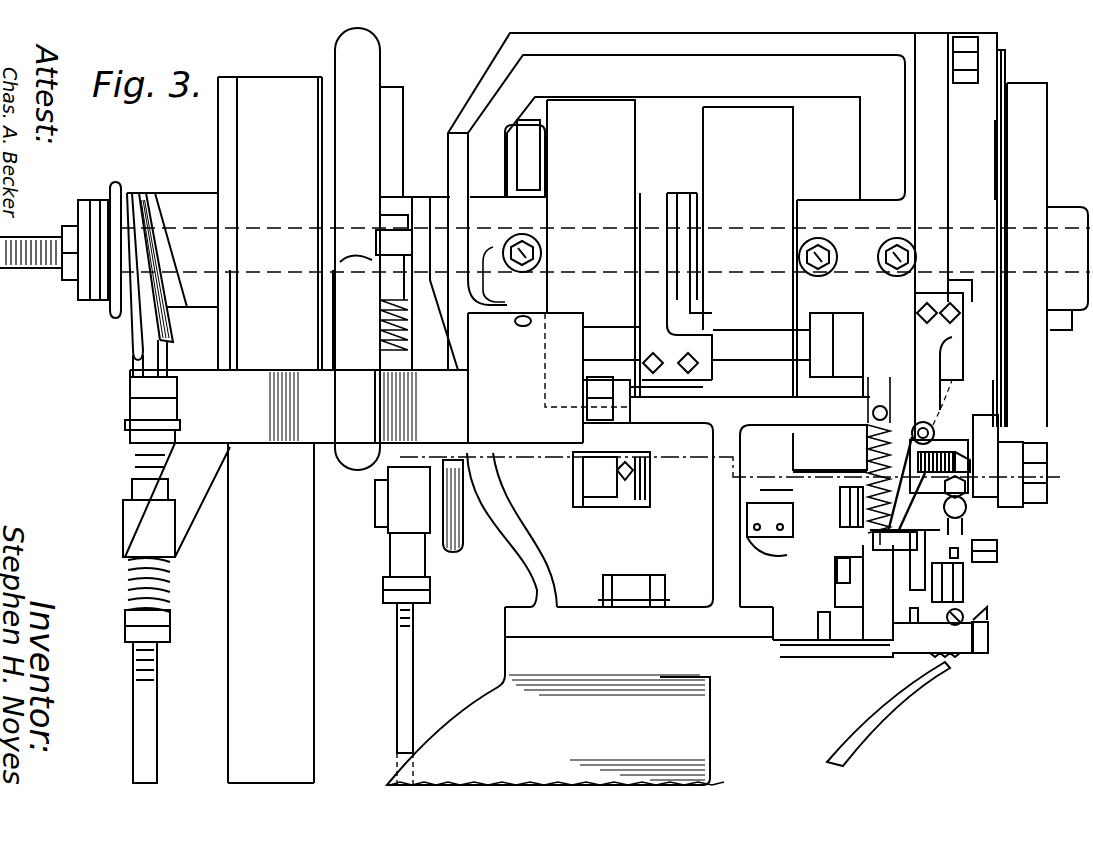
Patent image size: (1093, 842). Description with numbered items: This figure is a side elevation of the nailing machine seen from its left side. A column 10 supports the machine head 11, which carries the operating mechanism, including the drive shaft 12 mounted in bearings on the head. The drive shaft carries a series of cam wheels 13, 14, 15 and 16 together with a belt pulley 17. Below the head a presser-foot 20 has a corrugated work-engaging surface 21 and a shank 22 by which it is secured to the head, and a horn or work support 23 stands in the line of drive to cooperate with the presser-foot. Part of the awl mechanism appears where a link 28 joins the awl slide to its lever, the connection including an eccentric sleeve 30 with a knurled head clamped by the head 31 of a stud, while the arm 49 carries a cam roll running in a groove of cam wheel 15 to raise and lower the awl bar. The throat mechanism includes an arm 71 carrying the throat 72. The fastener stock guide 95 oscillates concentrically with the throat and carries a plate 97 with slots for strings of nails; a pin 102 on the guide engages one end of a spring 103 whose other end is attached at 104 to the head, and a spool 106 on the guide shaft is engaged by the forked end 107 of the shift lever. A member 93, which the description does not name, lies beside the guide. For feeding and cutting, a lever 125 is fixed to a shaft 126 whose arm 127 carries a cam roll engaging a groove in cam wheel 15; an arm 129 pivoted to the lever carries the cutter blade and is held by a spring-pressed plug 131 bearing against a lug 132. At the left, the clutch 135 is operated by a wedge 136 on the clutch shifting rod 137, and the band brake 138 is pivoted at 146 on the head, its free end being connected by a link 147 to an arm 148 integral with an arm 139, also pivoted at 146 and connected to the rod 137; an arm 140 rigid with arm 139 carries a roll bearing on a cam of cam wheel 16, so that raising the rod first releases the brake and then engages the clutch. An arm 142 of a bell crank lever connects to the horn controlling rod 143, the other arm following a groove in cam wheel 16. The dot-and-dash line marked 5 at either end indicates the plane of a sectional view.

The center line 5 is at (740, 468).
The column 10 is at (580, 696).
The machine head 11 is at (523, 553).
The drive shaft 12 is at (495, 240).
The cam wheel 13 is at (1047, 255).
The cam wheel 14 is at (750, 252).
The cam wheel 15 is at (593, 248).
The cam wheel 16 is at (392, 92).
The belt pulley 17 is at (222, 90).
The presser-foot 20 is at (988, 643).
The corrugated work-engaging surface 21 is at (955, 665).
The shank 22 is at (842, 655).
The horn or work support 23 is at (900, 703).
The link 28 is at (990, 505).
The eccentric sleeve 30 is at (1012, 505).
The head 31 is at (1045, 460).
The arm 49 is at (540, 153).
The arm 71 is at (900, 573).
The throat 72 is at (965, 605).
The block 93 is at (920, 548).
The fastener stock guide 95 is at (923, 577).
The plate 97 is at (963, 583).
The pin 102 is at (878, 537).
The spring 103 is at (868, 462).
The attachment point 104 is at (873, 416).
The spool 106 is at (627, 503).
The forked end 107 is at (603, 505).
The lever 125 is at (930, 398).
The shaft 126 is at (788, 355).
The arm 127 is at (668, 280).
The arm 129 is at (998, 560).
The spring-pressed plug 131 is at (935, 442).
The lug 132 is at (938, 468).
The clutch 135 is at (150, 212).
The wedge 136 is at (132, 327).
The clutch shifting rod 137 is at (150, 718).
The band brake 138 is at (357, 249).
The arm 139 is at (175, 530).
The arm 140 is at (420, 248).
The arm 142 is at (393, 560).
The horn controlling rod 143 is at (405, 675).
The pivot 146 is at (602, 425).
The link 147 is at (388, 217).
The arm 148 is at (405, 360).